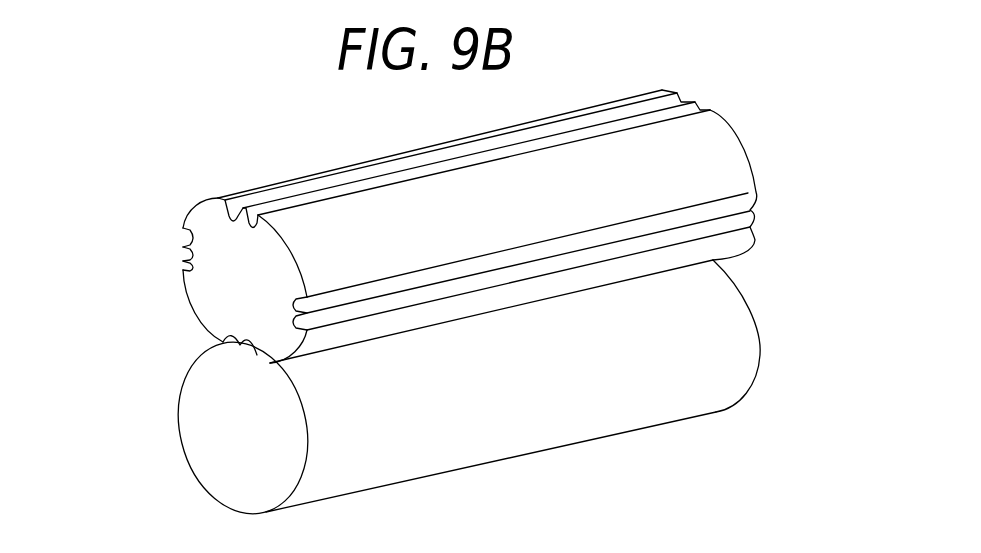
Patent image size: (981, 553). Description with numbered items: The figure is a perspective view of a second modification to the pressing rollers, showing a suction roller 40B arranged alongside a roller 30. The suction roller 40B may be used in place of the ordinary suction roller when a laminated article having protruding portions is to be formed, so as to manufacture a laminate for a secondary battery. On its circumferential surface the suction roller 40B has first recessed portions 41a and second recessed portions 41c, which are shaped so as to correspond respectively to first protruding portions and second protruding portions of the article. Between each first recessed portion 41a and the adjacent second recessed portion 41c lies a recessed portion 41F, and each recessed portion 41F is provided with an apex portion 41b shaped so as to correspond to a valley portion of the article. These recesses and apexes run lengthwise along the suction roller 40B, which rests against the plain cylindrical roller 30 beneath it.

The suction roller 40B is at (723, 152).
The roller 30 is at (727, 325).
The recessed portions 41F is at (112, 230).
The first recessed portions 41a is at (143, 268).
The apex portions 41b is at (187, 242).
The second recessed portions 41c is at (186, 236).